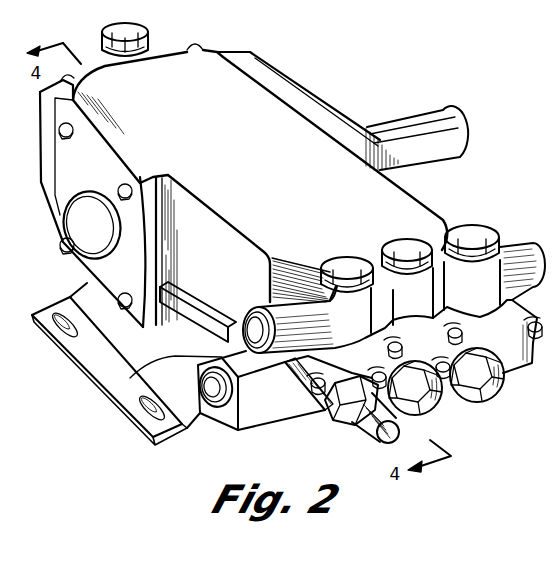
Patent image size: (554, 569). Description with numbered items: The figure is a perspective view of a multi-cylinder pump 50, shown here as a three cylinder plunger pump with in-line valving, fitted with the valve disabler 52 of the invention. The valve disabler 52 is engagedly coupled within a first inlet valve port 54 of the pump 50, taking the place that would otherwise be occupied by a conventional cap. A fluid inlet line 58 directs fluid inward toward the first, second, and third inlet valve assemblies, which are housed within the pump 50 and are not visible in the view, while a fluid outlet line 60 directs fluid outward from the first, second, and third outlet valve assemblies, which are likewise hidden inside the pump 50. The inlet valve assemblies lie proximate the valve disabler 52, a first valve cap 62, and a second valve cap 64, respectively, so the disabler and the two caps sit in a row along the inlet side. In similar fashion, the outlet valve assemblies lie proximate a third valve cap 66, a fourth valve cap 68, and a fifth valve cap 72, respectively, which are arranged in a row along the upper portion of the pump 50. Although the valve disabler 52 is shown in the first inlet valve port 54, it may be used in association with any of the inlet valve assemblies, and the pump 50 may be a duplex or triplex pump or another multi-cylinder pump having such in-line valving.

The multi-cylinder pump 50 is at (330, 74).
The valve disabler 52 is at (347, 430).
The first inlet valve port 54 is at (318, 417).
The fluid inlet line 58 is at (221, 408).
The fluid outlet line 60 is at (242, 342).
The first valve cap 62 is at (432, 408).
The second valve cap 64 is at (494, 393).
The third valve cap 66 is at (350, 252).
The fourth valve cap 68 is at (395, 243).
The fifth valve cap 72 is at (471, 226).